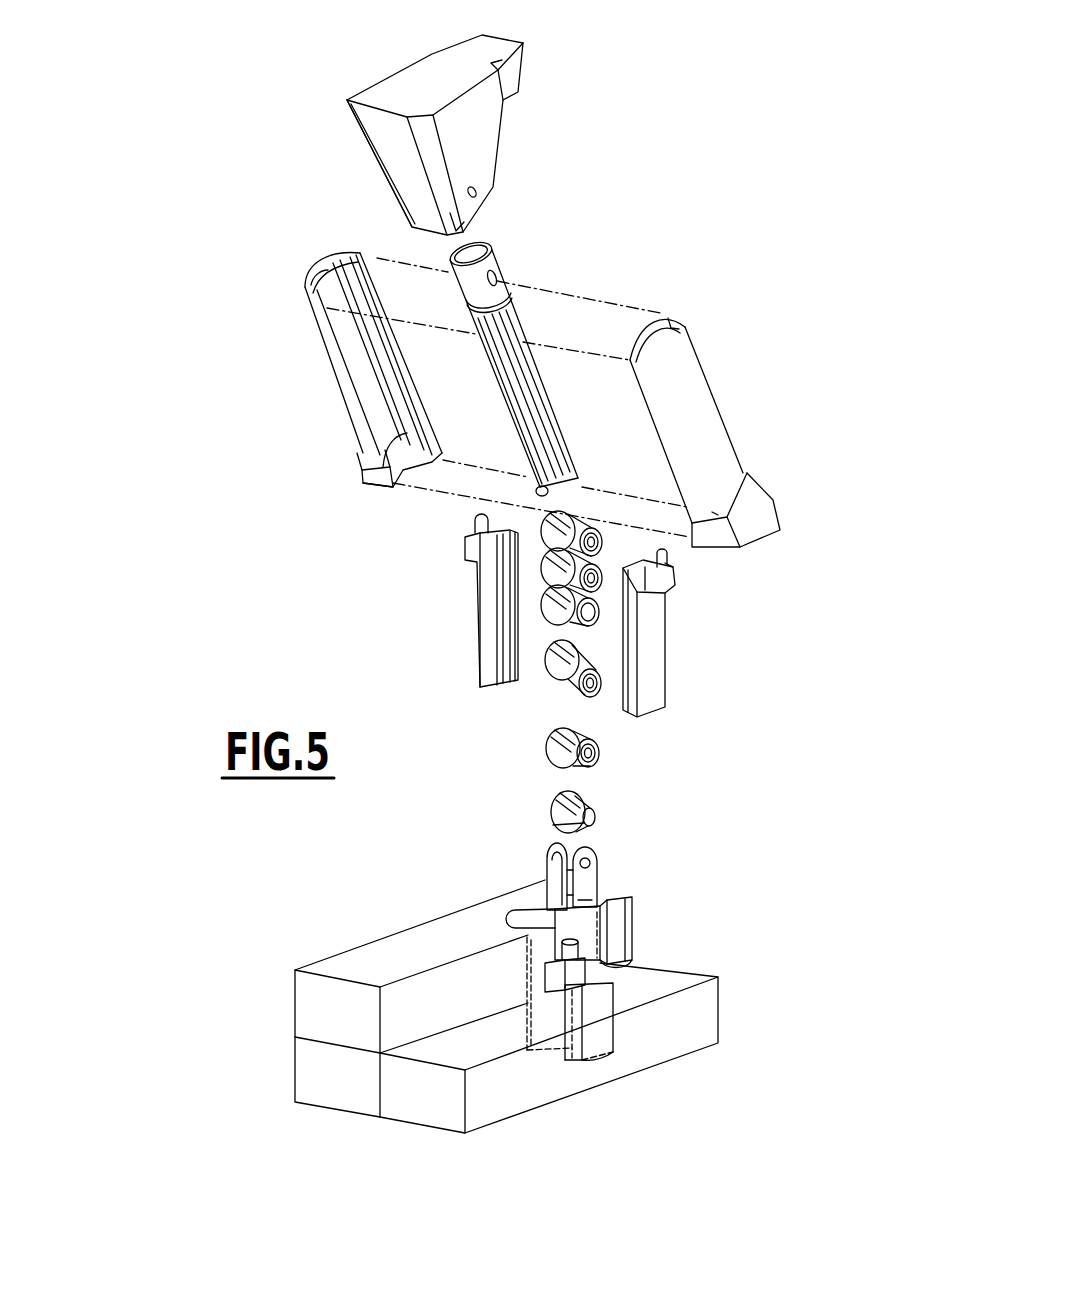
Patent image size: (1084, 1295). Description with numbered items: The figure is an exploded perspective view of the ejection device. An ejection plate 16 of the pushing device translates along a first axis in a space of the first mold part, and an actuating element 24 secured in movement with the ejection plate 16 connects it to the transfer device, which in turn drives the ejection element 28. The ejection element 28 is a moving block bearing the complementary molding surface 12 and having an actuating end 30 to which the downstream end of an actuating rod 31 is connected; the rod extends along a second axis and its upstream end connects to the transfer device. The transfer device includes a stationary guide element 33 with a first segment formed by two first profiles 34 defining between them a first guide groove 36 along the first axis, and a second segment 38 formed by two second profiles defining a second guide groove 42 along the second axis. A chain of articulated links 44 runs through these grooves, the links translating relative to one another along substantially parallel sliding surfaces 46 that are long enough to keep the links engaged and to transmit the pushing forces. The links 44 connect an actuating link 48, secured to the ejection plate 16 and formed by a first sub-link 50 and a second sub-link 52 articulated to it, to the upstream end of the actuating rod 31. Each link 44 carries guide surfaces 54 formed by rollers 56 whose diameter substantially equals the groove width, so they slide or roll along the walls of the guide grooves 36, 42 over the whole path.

The complementary molding surface 12 is at (449, 123).
The ejection plate 16 is at (335, 1080).
The actuating element 24 is at (617, 902).
The ejection element 28 is at (402, 155).
The actuating end 30 is at (467, 230).
The actuating rod 31 is at (550, 410).
The guide element 33 is at (532, 785).
The first profiles 34 is at (471, 628).
The first guide groove 36 is at (507, 638).
The second segment 38 is at (349, 353).
The second guide groove 42 is at (330, 292).
The articulated links 44 is at (557, 664).
The sliding surface 46 is at (598, 657).
The actuating link 48 is at (600, 863).
The first sub-link 50 is at (577, 874).
The second sub-link 52 is at (548, 823).
The guide surface 54 is at (536, 762).
The roller 56 is at (590, 815).